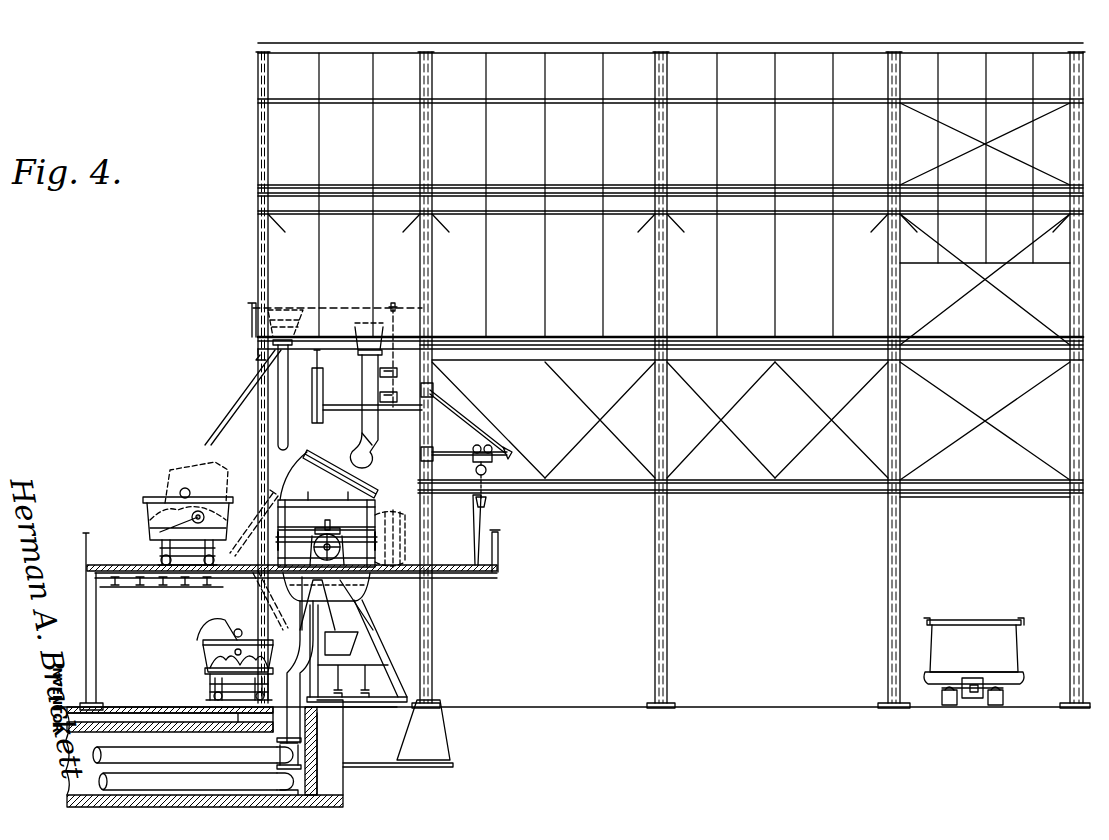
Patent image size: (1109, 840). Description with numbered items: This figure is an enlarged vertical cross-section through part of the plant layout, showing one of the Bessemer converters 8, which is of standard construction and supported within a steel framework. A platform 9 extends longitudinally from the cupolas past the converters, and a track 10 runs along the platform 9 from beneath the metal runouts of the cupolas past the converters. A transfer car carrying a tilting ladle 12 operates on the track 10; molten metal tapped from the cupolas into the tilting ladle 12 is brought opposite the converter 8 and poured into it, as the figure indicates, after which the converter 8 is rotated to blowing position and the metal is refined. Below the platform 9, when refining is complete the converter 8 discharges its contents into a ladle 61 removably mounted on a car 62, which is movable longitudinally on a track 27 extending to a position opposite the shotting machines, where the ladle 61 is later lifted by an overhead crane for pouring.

The Bessemer converter 8 is at (307, 481).
The platform 9 is at (113, 565).
The track 10 is at (195, 576).
The tilting ladle 12 is at (172, 495).
The track 27 is at (250, 713).
The ladle 61 is at (212, 650).
The car 62 is at (207, 671).